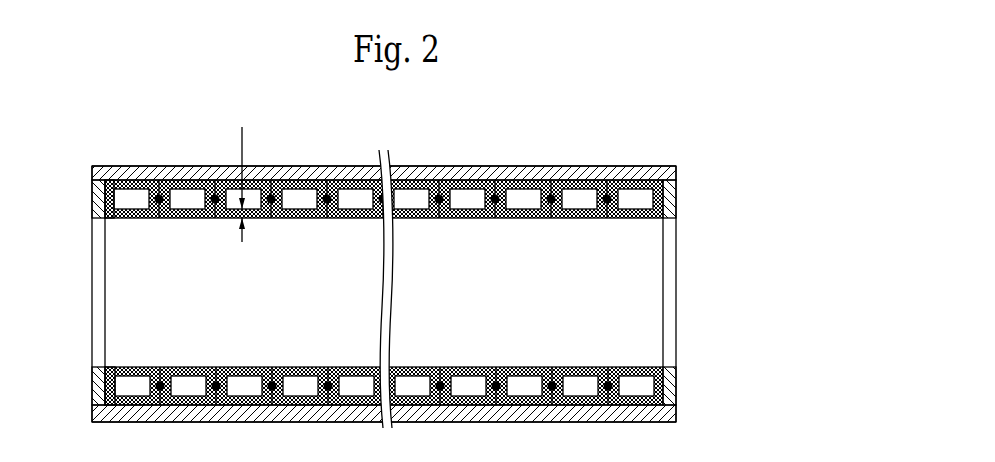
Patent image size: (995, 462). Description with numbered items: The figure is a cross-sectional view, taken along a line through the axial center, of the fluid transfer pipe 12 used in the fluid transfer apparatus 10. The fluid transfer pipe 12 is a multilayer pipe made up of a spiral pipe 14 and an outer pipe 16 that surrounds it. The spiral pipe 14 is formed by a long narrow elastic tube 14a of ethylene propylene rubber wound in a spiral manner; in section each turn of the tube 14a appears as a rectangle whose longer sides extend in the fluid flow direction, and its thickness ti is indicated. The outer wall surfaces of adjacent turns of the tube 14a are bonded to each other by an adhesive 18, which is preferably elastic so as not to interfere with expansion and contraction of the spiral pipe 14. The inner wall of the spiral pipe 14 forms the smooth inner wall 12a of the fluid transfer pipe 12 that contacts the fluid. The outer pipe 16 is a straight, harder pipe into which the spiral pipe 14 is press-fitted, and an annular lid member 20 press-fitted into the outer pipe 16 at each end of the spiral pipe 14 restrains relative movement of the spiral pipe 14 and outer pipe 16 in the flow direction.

The fluid transfer apparatus 10 is at (399, 257).
The fluid transfer pipe 12 is at (395, 269).
The inner wall 12a is at (573, 218).
The spiral pipe 14 is at (120, 223).
The tube 14a is at (93, 190).
The outer pipe 16 is at (518, 165).
The adhesive 18 is at (326, 196).
The lid member 20 is at (100, 385).